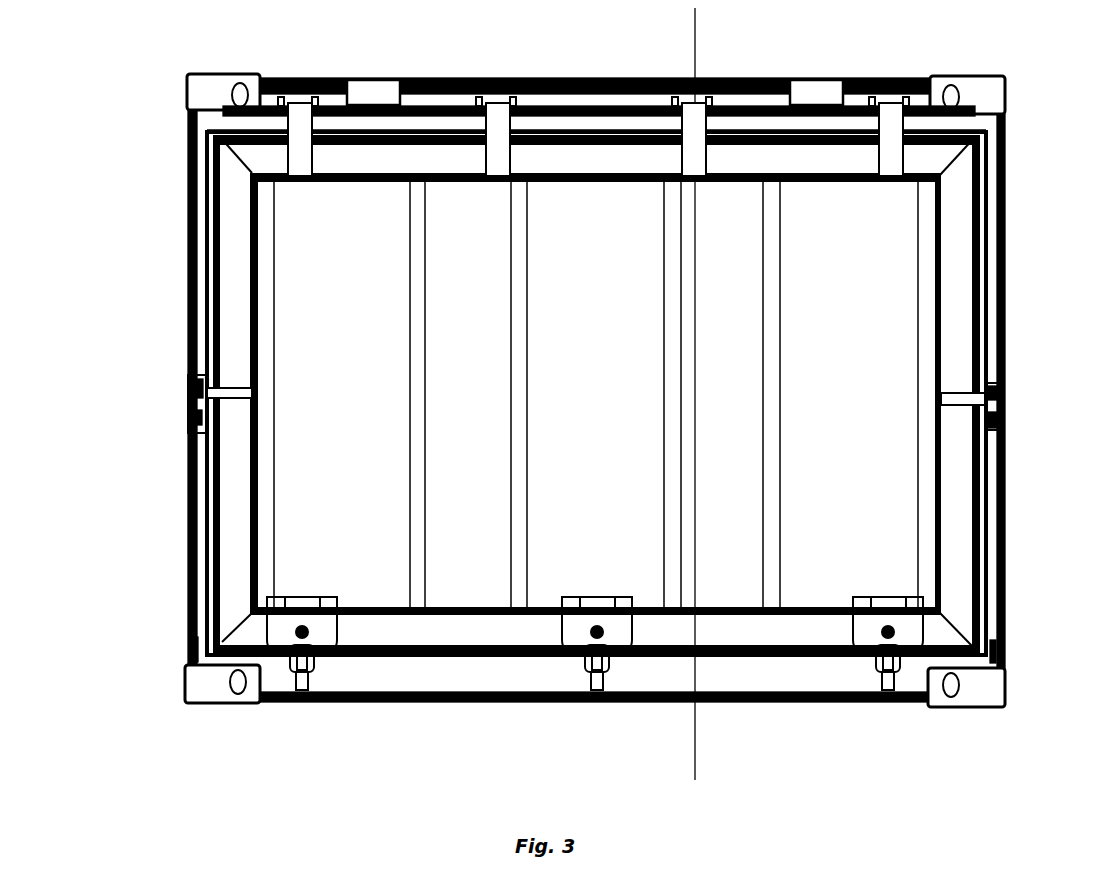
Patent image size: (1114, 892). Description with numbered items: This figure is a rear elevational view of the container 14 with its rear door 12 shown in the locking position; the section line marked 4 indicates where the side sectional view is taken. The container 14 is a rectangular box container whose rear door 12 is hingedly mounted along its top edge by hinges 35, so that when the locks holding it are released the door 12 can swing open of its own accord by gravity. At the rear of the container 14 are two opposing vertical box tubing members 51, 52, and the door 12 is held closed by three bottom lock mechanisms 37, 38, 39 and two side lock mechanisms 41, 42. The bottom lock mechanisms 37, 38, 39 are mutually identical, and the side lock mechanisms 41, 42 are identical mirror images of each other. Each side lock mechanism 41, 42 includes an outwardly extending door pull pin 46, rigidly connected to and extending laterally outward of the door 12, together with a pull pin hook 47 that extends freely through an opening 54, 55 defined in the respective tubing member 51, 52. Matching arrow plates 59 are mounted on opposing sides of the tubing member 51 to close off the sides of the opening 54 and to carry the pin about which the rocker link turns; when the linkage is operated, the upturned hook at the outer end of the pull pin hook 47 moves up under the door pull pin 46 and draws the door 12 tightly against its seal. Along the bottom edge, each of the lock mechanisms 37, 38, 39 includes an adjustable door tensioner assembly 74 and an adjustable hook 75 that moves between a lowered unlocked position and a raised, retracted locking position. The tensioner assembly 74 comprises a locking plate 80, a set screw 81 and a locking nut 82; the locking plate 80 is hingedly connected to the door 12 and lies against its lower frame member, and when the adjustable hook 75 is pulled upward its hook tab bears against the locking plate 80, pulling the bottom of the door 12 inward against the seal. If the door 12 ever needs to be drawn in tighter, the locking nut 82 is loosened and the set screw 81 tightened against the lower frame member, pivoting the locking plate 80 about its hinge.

The section line 4- 4 is at (642, 22).
The rear door 12 is at (988, 303).
The container 14 is at (1003, 222).
The hinges 35 is at (300, 125).
The bottom lock mechanism 37 is at (320, 683).
The bottom lock mechanism 38 is at (606, 660).
The bottom lock mechanism 39 is at (866, 680).
The side lock mechanism 41 is at (178, 400).
The side lock mechanism 42 is at (1010, 403).
The door pull pin 46 is at (244, 393).
The pull pin hook 47 is at (196, 418).
The vertical box tubing member 51 is at (197, 212).
The vertical box tubing member 52 is at (990, 248).
The opening 54 is at (205, 377).
The opening 55 is at (996, 382).
The arrow plate 59 is at (198, 378).
The adjustable door tensioner assembly 74 is at (573, 574).
The adjustable hook 75 is at (580, 688).
The locking plate 80 is at (616, 632).
The set screw 81 is at (590, 632).
The locking nut 82 is at (601, 624).